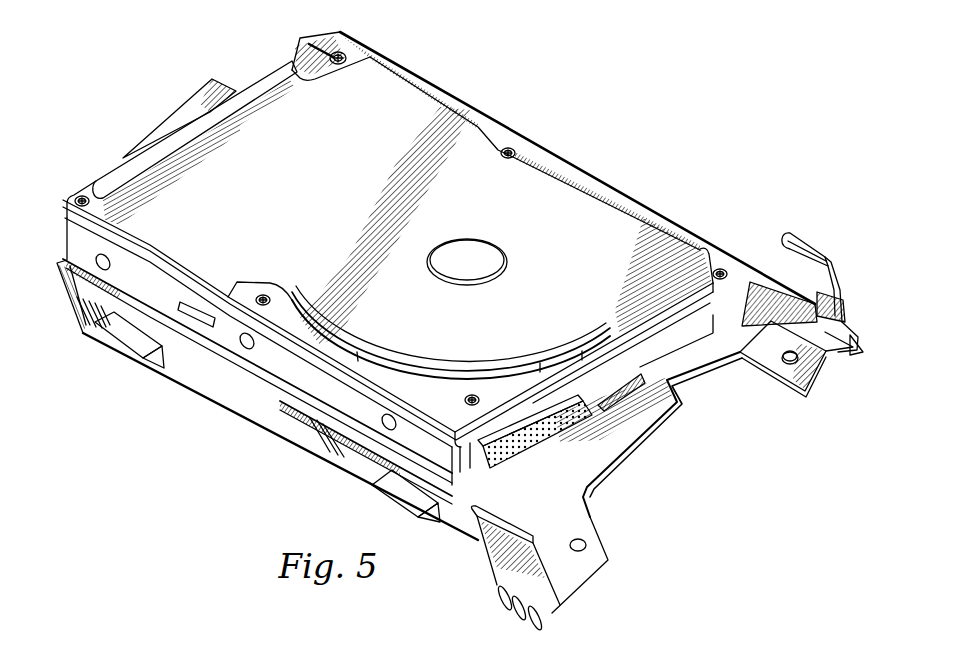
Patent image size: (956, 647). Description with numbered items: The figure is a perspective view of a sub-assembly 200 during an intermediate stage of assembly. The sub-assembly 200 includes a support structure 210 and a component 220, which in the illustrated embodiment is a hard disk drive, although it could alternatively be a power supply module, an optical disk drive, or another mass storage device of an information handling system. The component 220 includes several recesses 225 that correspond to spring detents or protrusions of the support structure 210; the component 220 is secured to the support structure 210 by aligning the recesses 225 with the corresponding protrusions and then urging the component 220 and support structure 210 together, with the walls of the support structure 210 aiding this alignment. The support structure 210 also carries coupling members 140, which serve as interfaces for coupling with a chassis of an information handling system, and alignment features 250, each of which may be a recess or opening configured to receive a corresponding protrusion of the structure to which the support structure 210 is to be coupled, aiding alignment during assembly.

The sub-assembly 200 is at (435, 331).
The support structure 210 is at (283, 428).
The component 220 is at (305, 200).
The recesses 225 is at (97, 262).
The coupling members 140 is at (806, 246).
The alignment features 250 is at (586, 492).